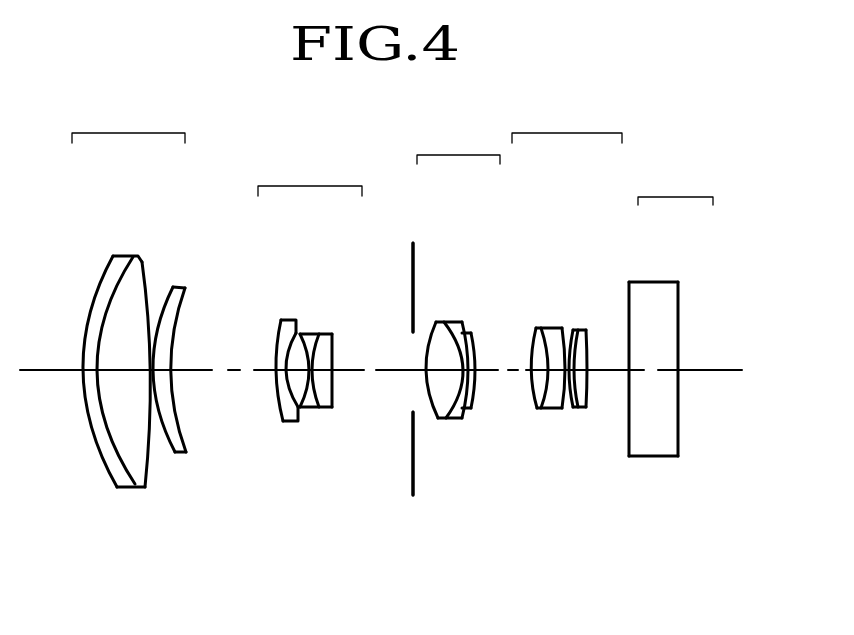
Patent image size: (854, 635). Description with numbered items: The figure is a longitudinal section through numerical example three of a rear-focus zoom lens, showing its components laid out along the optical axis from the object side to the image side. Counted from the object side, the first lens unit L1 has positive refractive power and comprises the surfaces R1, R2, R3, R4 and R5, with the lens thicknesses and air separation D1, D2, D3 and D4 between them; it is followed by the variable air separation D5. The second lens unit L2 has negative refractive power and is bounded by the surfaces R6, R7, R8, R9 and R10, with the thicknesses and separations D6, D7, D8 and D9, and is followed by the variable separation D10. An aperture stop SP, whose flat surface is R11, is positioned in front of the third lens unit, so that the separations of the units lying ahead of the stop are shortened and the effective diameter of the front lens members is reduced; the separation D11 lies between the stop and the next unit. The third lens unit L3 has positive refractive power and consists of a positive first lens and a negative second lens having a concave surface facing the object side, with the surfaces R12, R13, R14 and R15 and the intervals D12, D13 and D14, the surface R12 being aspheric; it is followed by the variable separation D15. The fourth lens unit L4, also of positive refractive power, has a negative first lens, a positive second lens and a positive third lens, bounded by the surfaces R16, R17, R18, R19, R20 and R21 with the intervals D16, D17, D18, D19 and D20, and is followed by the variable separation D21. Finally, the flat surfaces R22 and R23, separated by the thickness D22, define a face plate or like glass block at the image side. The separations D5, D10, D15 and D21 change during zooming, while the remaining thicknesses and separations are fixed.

The first lens unit L1 is at (128, 119).
The second lens unit L2 is at (458, 140).
The third lens unit L3 is at (310, 175).
The fourth lens unit L4 is at (567, 119).
The aperture stop SP is at (393, 310).
The first lens surface R1 is at (86, 345).
The second lens surface R2 is at (104, 278).
The third lens surface R3 is at (146, 284).
The fourth lens surface R4 is at (160, 300).
The fifth lens surface R5 is at (186, 292).
The sixth lens surface R6 is at (272, 352).
The seventh lens surface R7 is at (284, 320).
The eighth lens surface R8 is at (302, 334).
The ninth lens surface R9 is at (321, 334).
The tenth lens surface R10 is at (333, 335).
The stop surface R11 is at (412, 302).
The twelfth lens surface R12 is at (430, 340).
The thirteenth lens surface R13 is at (441, 322).
The fourteenth lens surface R14 is at (462, 322).
The fifteenth lens surface R15 is at (472, 333).
The sixteenth lens surface R16 is at (532, 356).
The seventeenth lens surface R17 is at (545, 328).
The eighteenth lens surface R18 is at (562, 328).
The nineteenth lens surface R19 is at (573, 330).
The twentieth lens surface R20 is at (576, 330).
The twenty-first lens surface R21 is at (586, 331).
The face plate surface R22 is at (629, 314).
The face plate surface R23 is at (678, 314).
The first lens thickness D1 is at (91, 410).
The second lens thickness D2 is at (128, 425).
The third air separation D3 is at (157, 440).
The fourth lens thickness D4 is at (173, 455).
The fifth air separation D5 is at (220, 375).
The sixth lens thickness D6 is at (280, 420).
The seventh air separation D7 is at (296, 424).
The eighth lens thickness D8 is at (304, 410).
The ninth lens thickness D9 is at (331, 412).
The tenth air separation D10 is at (372, 374).
The eleventh air separation D11 is at (434, 416).
The twelfth lens thickness D12 is at (447, 420).
The thirteenth air separation D13 is at (463, 412).
The fourteenth lens thickness D14 is at (478, 410).
The fifteenth air separation D15 is at (520, 385).
The sixteenth lens thickness D16 is at (537, 411).
The seventeenth air separation D17 is at (562, 410).
The eighteenth lens thickness D18 is at (572, 412).
The nineteenth air separation D19 is at (585, 415).
The twentieth lens thickness D20 is at (587, 412).
The twenty-first air separation D21 is at (597, 422).
The face plate thickness D22 is at (648, 375).